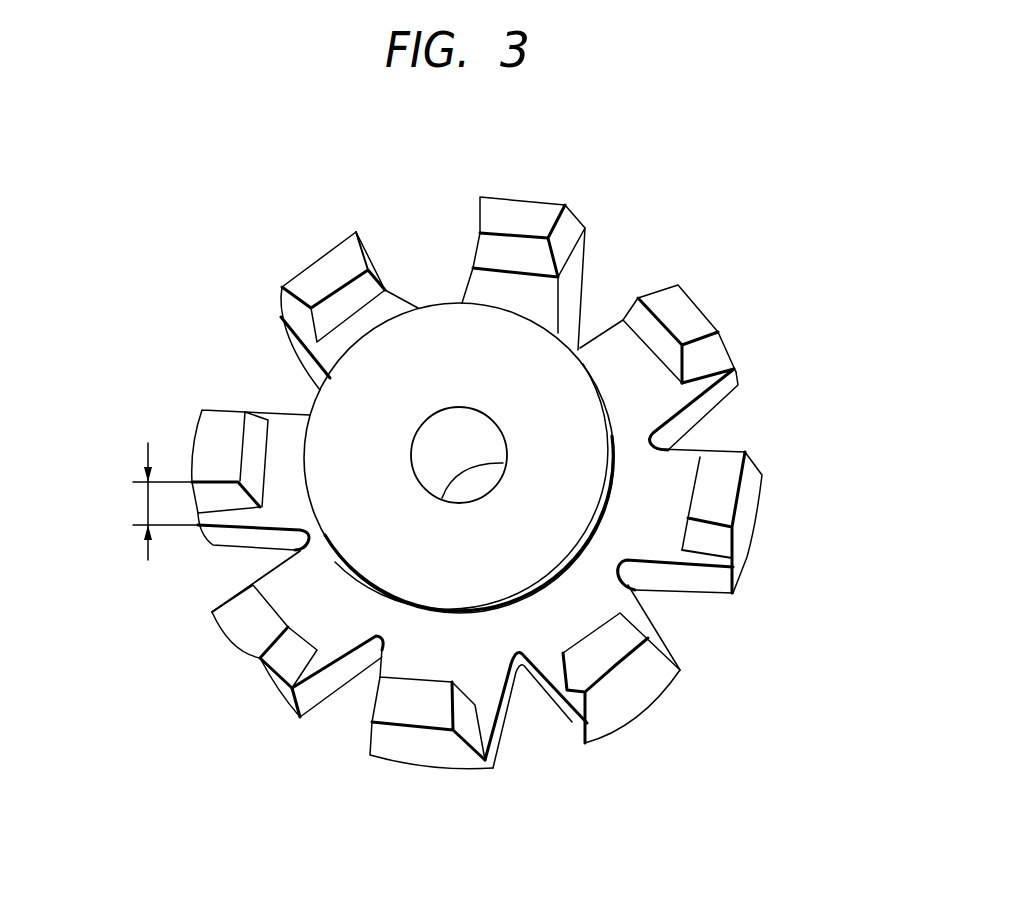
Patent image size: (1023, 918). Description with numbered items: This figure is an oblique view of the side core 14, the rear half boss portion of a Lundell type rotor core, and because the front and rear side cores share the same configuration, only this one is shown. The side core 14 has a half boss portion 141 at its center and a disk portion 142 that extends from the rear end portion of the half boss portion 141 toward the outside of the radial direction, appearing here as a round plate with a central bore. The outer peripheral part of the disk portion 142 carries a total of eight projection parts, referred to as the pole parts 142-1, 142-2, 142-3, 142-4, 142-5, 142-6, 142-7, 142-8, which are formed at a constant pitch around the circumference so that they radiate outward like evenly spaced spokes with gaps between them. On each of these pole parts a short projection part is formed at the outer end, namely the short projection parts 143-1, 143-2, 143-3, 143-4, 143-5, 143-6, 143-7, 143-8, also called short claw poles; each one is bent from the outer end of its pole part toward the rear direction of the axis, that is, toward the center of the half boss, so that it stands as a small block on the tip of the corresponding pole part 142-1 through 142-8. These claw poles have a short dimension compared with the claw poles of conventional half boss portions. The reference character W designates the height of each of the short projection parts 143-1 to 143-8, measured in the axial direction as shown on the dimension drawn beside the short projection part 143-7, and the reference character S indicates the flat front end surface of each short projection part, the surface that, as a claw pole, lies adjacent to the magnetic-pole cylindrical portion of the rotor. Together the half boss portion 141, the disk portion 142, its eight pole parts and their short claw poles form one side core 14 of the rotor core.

The side core 14 is at (673, 714).
The half boss portion 141 is at (553, 437).
The disk portion 142 is at (650, 515).
The pole part 142-1 is at (463, 267).
The pole part 142-2 is at (616, 342).
The pole part 142-3 is at (693, 448).
The pole part 142-4 is at (627, 607).
The pole part 142-5 is at (487, 683).
The pole part 142-6 is at (328, 682).
The pole part 142-7 is at (275, 412).
The pole part 142-8 is at (415, 307).
The short projection part 143-1 is at (570, 227).
The short projection part 143-2 is at (713, 342).
The short projection part 143-3 is at (715, 543).
The short projection part 143-4 is at (578, 696).
The short projection part 143-5 is at (463, 730).
The short projection part 143-6 is at (280, 665).
The short projection part 143-7 is at (223, 498).
The short projection part 143-8 is at (285, 312).
The height of short projection part W is at (160, 501).
The flat front end surface S is at (413, 713).